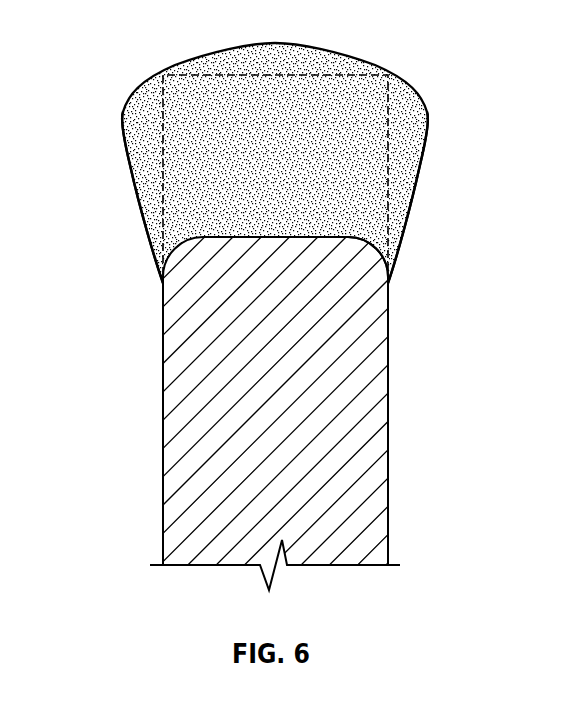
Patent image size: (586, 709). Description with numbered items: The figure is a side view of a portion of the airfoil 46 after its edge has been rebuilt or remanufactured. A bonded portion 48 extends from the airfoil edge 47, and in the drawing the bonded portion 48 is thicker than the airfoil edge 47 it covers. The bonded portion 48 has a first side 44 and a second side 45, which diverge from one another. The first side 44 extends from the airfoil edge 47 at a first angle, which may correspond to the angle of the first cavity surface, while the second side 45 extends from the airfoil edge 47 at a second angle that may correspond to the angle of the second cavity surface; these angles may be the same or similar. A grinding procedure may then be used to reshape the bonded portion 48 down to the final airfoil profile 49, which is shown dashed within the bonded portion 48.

The first side 44 is at (122, 177).
The second side 45 is at (430, 177).
The airfoil 46 is at (348, 360).
The airfoil edge 47 is at (343, 238).
The bonded portion 48 is at (418, 135).
The final airfoil profile 49 is at (420, 92).